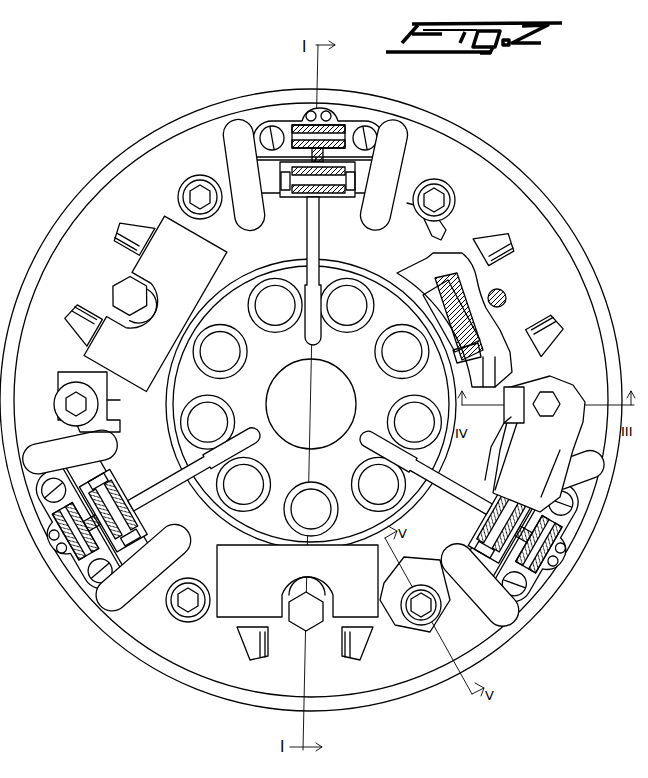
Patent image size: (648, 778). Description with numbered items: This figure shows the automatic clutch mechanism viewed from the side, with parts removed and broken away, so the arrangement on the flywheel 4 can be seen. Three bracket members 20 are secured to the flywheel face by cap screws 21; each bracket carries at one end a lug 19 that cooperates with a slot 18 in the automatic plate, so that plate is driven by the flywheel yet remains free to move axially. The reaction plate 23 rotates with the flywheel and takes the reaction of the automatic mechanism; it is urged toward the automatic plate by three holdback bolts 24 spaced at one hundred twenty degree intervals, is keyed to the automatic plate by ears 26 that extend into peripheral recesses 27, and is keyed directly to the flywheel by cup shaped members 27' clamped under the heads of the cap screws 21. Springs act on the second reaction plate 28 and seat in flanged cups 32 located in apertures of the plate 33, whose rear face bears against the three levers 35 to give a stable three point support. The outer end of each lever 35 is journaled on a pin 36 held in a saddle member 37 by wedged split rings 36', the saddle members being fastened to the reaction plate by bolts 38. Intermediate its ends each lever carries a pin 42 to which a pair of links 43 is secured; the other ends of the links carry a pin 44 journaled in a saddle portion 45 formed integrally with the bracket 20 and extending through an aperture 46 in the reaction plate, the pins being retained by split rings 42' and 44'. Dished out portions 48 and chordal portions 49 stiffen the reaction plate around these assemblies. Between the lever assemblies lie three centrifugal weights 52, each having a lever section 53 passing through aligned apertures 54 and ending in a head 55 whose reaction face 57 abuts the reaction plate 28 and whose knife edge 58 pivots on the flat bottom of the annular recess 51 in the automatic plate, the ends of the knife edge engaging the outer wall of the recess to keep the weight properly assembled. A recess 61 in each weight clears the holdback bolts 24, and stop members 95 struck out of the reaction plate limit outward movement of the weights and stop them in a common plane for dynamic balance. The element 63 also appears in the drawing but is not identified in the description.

The flywheel 4 is at (136, 156).
The slots 18 is at (500, 420).
The lug 19 is at (515, 386).
The bracket member 20 is at (75, 415).
The cap screws 21 is at (196, 190).
The reaction plate 23 is at (425, 160).
The holdback bolts 24 is at (125, 288).
The ears 26 is at (100, 404).
The recesses 27 is at (253, 531).
The cup shaped members 27' is at (170, 388).
The second reaction plate 28 is at (408, 280).
The flanged cups 32 is at (276, 328).
The plate 33 is at (252, 393).
The levers 35 is at (310, 237).
The pin 36 is at (307, 342).
The split rings 36' is at (315, 522).
The saddle member 37 is at (294, 130).
The bolts 38 is at (268, 130).
The pin 42 is at (133, 481).
The split rings 42' is at (499, 516).
The link members 43 is at (332, 198).
The pin 44 is at (307, 362).
The split rings 44' is at (315, 182).
The saddle member 45 is at (312, 197).
The apertures 46 is at (320, 226).
The dished out portions 48 is at (238, 150).
The chordal portions 49 is at (366, 182).
The annular recess 51 is at (487, 372).
The centrifugal weights 52 is at (207, 246).
The lever section 53 is at (453, 350).
The apertures 54 is at (486, 346).
The heads 55 is at (440, 300).
The reaction face 57 is at (470, 322).
The knife edges 58 is at (461, 300).
The recess 61 is at (140, 285).
The rod end 63 is at (361, 432).
The stop members 95 is at (130, 235).